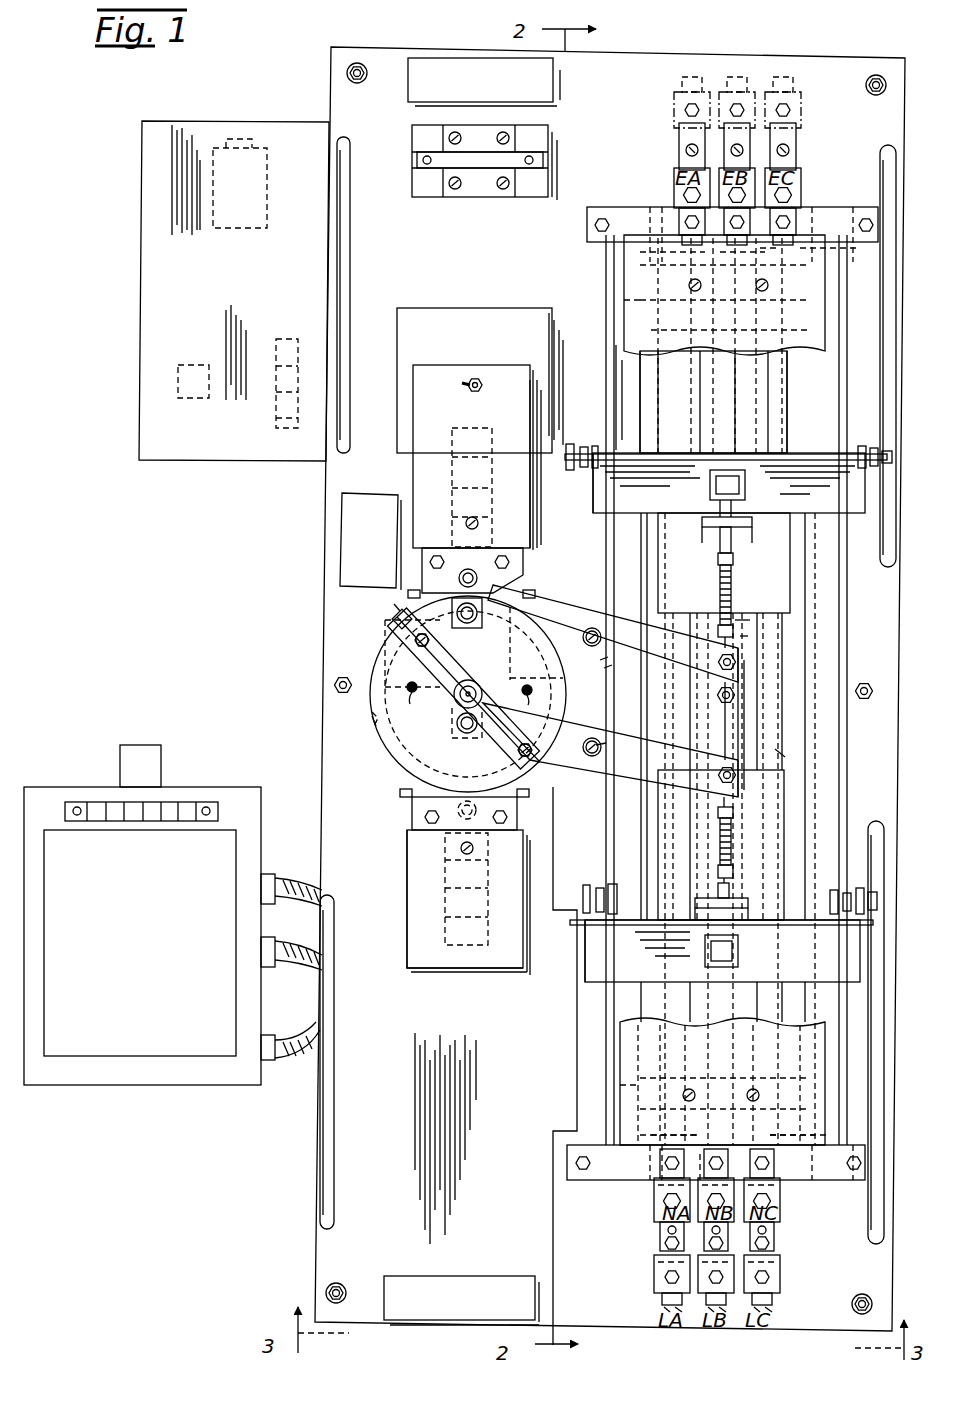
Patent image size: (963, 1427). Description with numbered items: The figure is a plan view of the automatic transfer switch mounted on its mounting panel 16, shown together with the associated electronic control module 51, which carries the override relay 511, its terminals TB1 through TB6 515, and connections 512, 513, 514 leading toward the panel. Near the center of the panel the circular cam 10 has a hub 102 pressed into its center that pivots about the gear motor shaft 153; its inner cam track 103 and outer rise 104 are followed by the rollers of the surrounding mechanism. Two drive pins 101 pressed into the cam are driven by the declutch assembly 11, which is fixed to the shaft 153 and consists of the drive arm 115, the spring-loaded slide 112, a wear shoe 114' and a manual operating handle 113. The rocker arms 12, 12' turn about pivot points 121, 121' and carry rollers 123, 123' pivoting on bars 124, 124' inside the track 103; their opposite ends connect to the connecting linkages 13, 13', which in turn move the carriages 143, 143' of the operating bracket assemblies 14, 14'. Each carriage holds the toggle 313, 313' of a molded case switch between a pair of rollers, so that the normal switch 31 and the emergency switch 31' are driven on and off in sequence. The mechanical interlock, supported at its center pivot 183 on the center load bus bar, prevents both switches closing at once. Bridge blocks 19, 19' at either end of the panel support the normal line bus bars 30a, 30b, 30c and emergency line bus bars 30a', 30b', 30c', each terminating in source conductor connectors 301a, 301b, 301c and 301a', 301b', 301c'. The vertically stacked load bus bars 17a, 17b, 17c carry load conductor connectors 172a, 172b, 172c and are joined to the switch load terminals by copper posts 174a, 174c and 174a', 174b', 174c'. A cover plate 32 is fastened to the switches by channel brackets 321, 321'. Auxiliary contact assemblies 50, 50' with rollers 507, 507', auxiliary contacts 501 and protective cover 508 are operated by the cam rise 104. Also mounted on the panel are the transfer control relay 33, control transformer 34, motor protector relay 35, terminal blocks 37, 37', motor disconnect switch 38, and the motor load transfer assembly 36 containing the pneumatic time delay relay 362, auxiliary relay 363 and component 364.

The cam 10 is at (370, 652).
The declutch assembly 11 is at (393, 613).
The rocker arm 12 is at (610, 770).
The rocker arm 12' is at (616, 691).
The connecting linkage 13 is at (747, 840).
The connecting linkage 13' is at (777, 600).
The operating bracket assembly 14 is at (608, 951).
The operating bracket assembly 14' is at (593, 441).
The mounting panel 16 is at (326, 734).
The load bus bar 17a is at (673, 398).
The load bus bar 17b is at (734, 367).
The load bus bar 17c is at (775, 384).
The insulating bridge block 19 is at (687, 1161).
The insulating bridge block 19' is at (697, 222).
The line bus bar 30a is at (647, 1175).
The line bus bar 30b is at (760, 1183).
The line bus bar 30c is at (818, 1175).
The line bus bar 30a' is at (613, 234).
The line bus bar 30b' is at (692, 214).
The line bus bar 30c' is at (830, 221).
The normal molded case switch 31 is at (674, 845).
The emergency molded case switch 31' is at (742, 690).
The cover plate 32 is at (633, 284).
The transfer control relay 33 is at (411, 171).
The control transformer 34 is at (424, 298).
The motor protector relay 35 is at (370, 517).
The motor load transfer assembly 36 is at (141, 181).
The terminal block 37 is at (461, 1284).
The terminal block 37' is at (459, 97).
The motor disconnect switch 38 is at (472, 382).
The auxiliary contact assembly 50 is at (442, 902).
The auxiliary contact assembly 50' is at (492, 457).
The electronic control module 51 is at (83, 787).
The drive pin 101 is at (412, 697).
The hub 102 is at (465, 672).
The cam track 103 is at (370, 708).
The cam rise 104 is at (373, 730).
The slide 112 is at (392, 620).
The manual operating handle 113 is at (530, 755).
The wear shoe 114' is at (441, 573).
The drive arm 115 is at (510, 747).
The pivot point 121 is at (650, 732).
The pivot point 121' is at (586, 601).
The roller 123 is at (452, 690).
The roller 123' is at (470, 567).
The bar 124 is at (620, 723).
The bar 124' is at (625, 676).
The carriage 143 is at (767, 919).
The carriage 143' is at (775, 528).
The gear motor shaft 153 is at (477, 680).
The power load conductor connector 172a is at (653, 1280).
The power load conductor connector 172b is at (720, 1305).
The power load conductor connector 172c is at (780, 1289).
The copper post 174a is at (716, 886).
The copper post 174a' is at (728, 528).
The copper post 174b' is at (820, 654).
The copper post 174c is at (834, 720).
The copper post 174c' is at (817, 618).
The center pivot 183 is at (731, 691).
The normal source power conductor connector 301a is at (639, 1202).
The normal source power conductor connector 301b is at (769, 1217).
The normal source power conductor connector 301c is at (792, 1204).
The emergency source power conductor connector 301a' is at (653, 161).
The emergency source power conductor connector 301b' is at (792, 161).
The emergency source power conductor connector 301c' is at (820, 161).
The toggle 313 is at (772, 958).
The toggle 313' is at (707, 457).
The channel bracket 321 is at (582, 1071).
The channel bracket 321' is at (594, 298).
The pneumatic time delay relay 362 is at (259, 167).
The auxiliary relay 363 is at (193, 367).
The terminal strip 364 is at (276, 400).
The normally closed auxiliary contacts 501 is at (452, 483).
The roller 507 is at (438, 809).
The roller 507' is at (428, 554).
The cover 508 is at (543, 378).
The override relay 511 is at (143, 754).
The cable 512 is at (300, 884).
The cable 513 is at (296, 954).
The cable 514 is at (291, 1038).
The terminals TB1 through TB6 515 is at (167, 824).